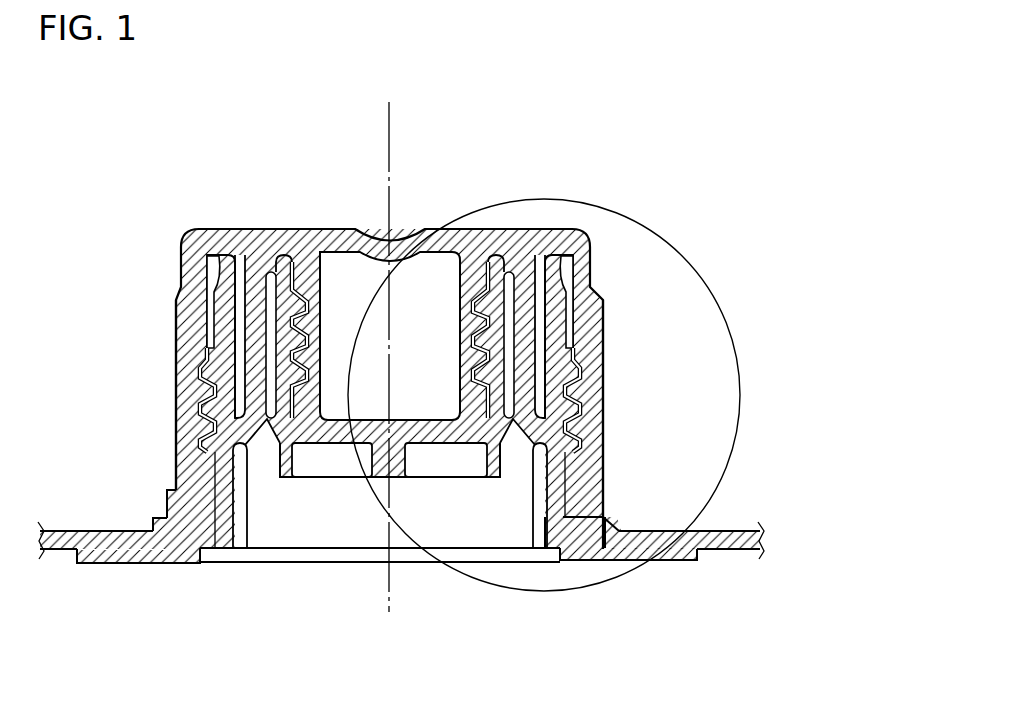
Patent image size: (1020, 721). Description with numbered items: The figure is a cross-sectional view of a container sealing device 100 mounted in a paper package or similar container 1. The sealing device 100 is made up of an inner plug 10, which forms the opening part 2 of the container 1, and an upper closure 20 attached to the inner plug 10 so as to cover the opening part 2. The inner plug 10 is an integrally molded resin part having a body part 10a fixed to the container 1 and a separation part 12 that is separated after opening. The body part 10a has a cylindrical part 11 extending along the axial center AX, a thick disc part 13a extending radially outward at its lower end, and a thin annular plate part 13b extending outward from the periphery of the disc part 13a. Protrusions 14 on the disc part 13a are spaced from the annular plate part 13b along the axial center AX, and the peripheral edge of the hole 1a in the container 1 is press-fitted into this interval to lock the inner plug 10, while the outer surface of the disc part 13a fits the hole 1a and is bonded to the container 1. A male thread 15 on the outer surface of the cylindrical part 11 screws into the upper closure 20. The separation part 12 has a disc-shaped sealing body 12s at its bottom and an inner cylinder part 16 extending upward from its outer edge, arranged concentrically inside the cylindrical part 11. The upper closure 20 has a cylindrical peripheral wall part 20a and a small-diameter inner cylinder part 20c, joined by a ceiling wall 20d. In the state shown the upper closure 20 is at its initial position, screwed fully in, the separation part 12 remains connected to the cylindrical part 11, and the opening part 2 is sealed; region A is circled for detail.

The container 1 is at (734, 516).
The hole 1a is at (177, 517).
The opening part 2 is at (347, 538).
The inner plug 10 is at (177, 570).
The body part 10a is at (547, 568).
The cylindrical part 11 is at (533, 483).
The separation part 12 is at (453, 447).
The sealing body 12s is at (323, 433).
The disc part 13a is at (592, 562).
The annular plate part 13b is at (677, 563).
The protrusions 14 is at (618, 522).
The male thread 15 is at (593, 368).
The inner cylinder part 16 is at (321, 262).
The upper closure 20 is at (288, 224).
The peripheral wall part 20a is at (177, 389).
The small-diameter inner cylinder part 20c is at (270, 540).
The ceiling wall 20d is at (223, 229).
The sealing device 100 is at (634, 76).
The enlarged region A is at (649, 226).
The axial center AX is at (392, 127).